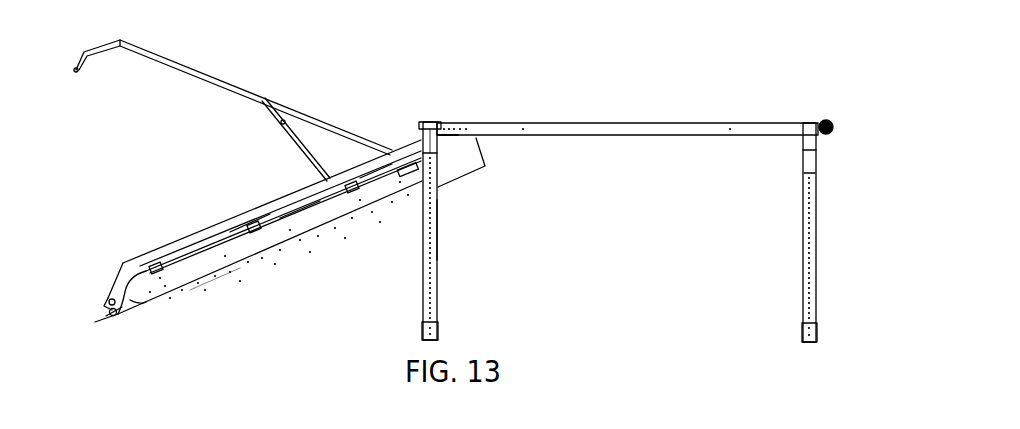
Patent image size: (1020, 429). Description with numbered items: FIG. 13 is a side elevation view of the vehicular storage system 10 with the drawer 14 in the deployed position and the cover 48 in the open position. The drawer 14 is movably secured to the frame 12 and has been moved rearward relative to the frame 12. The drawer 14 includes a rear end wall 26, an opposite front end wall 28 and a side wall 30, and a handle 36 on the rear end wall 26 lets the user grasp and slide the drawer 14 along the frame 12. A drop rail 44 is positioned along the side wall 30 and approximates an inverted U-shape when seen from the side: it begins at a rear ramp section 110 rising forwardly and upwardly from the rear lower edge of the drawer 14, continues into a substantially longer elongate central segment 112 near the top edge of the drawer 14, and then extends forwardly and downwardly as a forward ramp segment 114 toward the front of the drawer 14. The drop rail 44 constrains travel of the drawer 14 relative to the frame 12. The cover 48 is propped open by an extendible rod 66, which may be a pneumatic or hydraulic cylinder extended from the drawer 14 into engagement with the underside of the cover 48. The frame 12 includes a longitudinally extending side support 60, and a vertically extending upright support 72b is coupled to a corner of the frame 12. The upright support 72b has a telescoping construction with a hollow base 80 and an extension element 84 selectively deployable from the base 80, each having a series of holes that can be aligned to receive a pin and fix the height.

The vehicular storage system 10 is at (735, 50).
The frame 12 is at (755, 95).
The drawer 14 is at (358, 236).
The rear end wall 26 is at (112, 302).
The front end wall 28 is at (476, 138).
The side wall 30 is at (215, 275).
The handle 36 is at (108, 310).
The drop rail 44 is at (297, 213).
The cover 48 is at (248, 90).
The side support 60 is at (570, 125).
The extendible rod 66 is at (283, 133).
The upright support 72b is at (437, 230).
The hollow base 80 is at (437, 272).
The extension element 84 is at (437, 337).
The rear ramp section 110 is at (145, 303).
The elongate central segment 112 is at (250, 222).
The forward ramp segment 114 is at (375, 172).